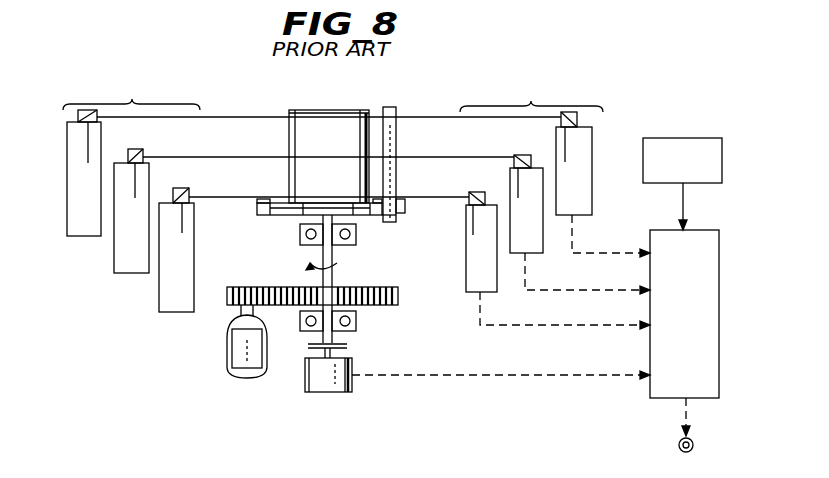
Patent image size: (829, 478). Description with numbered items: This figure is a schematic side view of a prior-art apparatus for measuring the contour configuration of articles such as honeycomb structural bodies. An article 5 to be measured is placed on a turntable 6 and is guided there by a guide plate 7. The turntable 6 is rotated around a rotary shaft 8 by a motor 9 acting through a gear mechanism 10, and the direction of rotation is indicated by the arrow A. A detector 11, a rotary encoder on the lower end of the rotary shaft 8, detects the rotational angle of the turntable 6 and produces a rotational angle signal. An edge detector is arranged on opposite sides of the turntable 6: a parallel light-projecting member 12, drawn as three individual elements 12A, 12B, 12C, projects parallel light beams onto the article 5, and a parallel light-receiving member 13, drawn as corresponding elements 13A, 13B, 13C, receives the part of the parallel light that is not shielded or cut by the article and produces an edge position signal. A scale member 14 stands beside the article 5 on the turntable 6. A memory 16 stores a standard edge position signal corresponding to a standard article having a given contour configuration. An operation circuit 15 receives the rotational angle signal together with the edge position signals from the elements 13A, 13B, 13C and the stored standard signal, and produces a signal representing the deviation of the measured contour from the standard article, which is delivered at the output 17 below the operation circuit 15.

The article 5 is at (340, 110).
The turntable 6 is at (365, 215).
The guide plate 7 is at (267, 200).
The rotary shaft 8 is at (318, 253).
The motor 9 is at (265, 368).
The gear mechanism 10 is at (273, 286).
The detector 11 is at (352, 392).
The parallel light-projecting member 12 is at (146, 89).
The light emitting element 12A is at (80, 237).
The light emitting element 12B is at (126, 274).
The light emitting element 12C is at (179, 313).
The parallel light-receiving member 13 is at (544, 91).
The light receiving element 13A is at (575, 217).
The light receiving element 13B is at (532, 255).
The light receiving element 13C is at (472, 294).
The gauge / scale 14 is at (392, 107).
The operation circuit 15 is at (650, 400).
The memory 16 is at (683, 138).
The operation circuit 17 is at (679, 446).
The rotation direction A is at (343, 264).